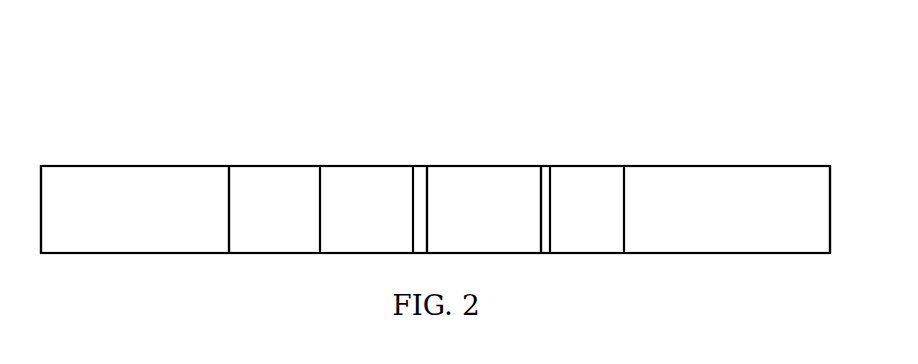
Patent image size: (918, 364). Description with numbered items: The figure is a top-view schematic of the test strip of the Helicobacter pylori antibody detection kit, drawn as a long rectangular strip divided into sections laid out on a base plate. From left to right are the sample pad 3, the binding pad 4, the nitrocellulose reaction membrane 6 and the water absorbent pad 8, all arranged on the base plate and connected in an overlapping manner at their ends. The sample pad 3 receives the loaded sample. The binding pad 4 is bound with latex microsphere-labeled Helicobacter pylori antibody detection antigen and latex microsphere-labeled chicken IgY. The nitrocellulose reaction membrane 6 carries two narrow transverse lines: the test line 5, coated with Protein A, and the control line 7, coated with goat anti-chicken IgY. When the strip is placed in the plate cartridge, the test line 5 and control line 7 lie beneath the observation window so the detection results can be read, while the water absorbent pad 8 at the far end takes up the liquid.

The sample pad 3 is at (128, 187).
The binding pad 4 is at (257, 188).
The test line 5 is at (418, 173).
The nitrocellulose reaction membrane 6 is at (485, 180).
The control line 7 is at (547, 173).
The water absorbent pad 8 is at (683, 197).